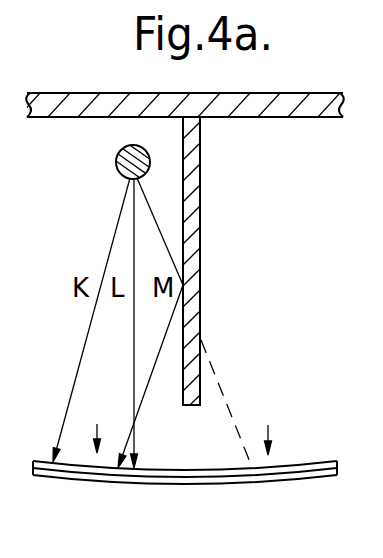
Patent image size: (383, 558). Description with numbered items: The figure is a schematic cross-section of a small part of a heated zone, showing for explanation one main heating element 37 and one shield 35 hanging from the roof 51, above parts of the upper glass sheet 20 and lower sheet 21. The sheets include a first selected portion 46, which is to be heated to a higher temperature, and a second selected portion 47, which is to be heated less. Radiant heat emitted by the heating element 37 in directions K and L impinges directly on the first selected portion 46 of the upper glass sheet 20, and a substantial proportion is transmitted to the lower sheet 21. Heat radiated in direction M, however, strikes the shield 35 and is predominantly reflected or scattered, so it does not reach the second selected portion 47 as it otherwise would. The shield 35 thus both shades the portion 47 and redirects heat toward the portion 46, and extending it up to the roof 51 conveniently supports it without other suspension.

The roof 51 is at (72, 93).
The shield 35 is at (192, 135).
The main heating element 37 is at (121, 150).
The first selected portion 46 is at (94, 424).
The second selected portion 47 is at (270, 426).
The upper glass sheet 20 is at (321, 462).
The lower sheet 21 is at (312, 478).